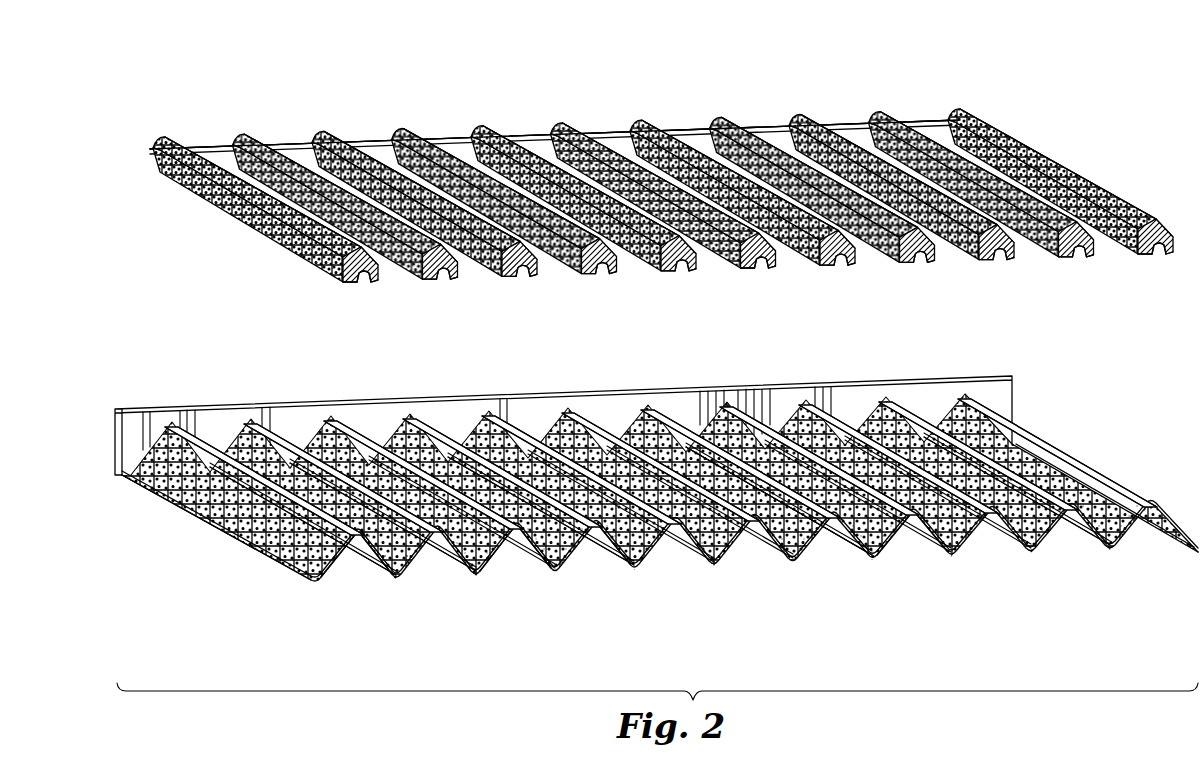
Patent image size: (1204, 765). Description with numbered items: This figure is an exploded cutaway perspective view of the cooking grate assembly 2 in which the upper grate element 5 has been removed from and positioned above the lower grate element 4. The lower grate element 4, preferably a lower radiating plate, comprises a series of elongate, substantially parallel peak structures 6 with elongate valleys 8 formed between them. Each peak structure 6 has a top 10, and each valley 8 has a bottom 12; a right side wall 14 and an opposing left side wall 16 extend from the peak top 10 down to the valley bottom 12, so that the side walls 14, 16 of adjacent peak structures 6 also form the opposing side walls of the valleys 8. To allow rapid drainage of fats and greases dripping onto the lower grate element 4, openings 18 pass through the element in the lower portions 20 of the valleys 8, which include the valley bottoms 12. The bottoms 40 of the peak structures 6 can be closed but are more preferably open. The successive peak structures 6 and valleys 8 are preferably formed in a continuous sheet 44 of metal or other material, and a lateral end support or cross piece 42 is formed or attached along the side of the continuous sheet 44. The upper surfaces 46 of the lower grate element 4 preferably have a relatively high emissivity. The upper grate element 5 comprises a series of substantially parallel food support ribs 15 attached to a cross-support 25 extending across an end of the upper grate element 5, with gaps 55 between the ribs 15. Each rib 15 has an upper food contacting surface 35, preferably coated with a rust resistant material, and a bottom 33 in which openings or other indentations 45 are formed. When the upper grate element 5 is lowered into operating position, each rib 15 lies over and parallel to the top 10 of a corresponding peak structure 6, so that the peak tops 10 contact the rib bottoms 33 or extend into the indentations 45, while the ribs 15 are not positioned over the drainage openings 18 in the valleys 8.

The cooking grate assembly 2 is at (1015, 106).
The upper grate element 5 is at (608, 132).
The food support ribs 15 is at (402, 130).
The cross-support 25 is at (528, 138).
The bottoms of the food support ribs 33 is at (370, 285).
The upper food contacting surfaces 35 is at (248, 146).
The indentations 45 is at (522, 275).
The gaps 55 is at (390, 277).
The lower grate element 4 is at (312, 585).
The peak structures 6 is at (323, 415).
The valleys 8 is at (408, 565).
The tops of the peak structures 10 is at (513, 420).
The valley bottoms 12 is at (485, 570).
The right side wall 14 is at (340, 567).
The left side wall 16 is at (385, 542).
The openings 18 is at (453, 563).
The lower portions of the valleys 20 is at (963, 547).
The bottoms of the peak structures 40 is at (587, 557).
The lateral end support 42 is at (207, 412).
The continuous sheet 44 is at (223, 493).
The upper surfaces 46 is at (667, 495).